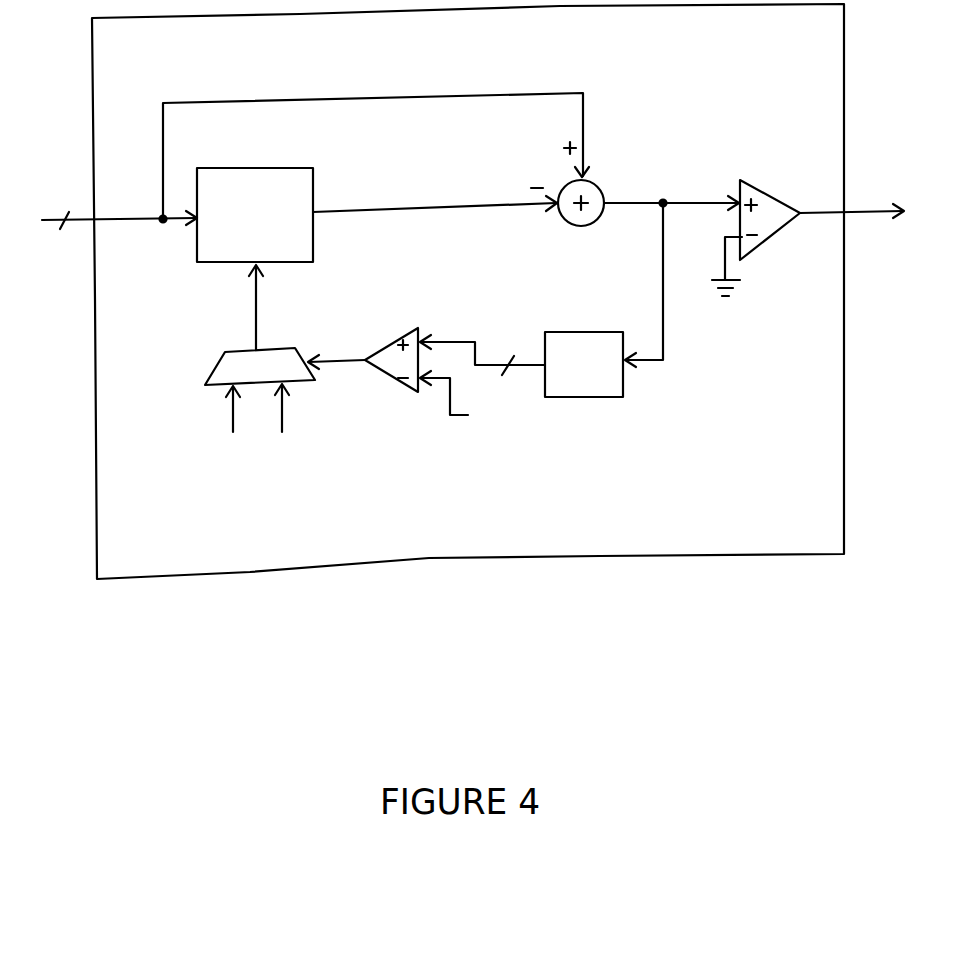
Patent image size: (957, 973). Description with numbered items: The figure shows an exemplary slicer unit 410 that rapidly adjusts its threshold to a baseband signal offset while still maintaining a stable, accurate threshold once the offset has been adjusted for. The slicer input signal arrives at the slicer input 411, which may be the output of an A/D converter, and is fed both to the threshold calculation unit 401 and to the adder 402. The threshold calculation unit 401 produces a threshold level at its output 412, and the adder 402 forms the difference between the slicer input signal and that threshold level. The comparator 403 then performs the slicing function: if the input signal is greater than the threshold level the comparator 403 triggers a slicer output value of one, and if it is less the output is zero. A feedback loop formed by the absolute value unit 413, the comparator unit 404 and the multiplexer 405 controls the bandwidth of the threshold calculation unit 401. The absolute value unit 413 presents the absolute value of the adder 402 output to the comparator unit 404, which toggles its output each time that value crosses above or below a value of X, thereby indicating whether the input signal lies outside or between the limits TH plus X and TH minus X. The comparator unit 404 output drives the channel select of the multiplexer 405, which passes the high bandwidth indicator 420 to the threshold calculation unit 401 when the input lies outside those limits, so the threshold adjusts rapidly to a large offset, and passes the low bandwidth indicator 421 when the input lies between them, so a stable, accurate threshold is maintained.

The slicer unit 410 is at (162, 58).
The slicer input 411 is at (86, 219).
The threshold calculation unit 401 is at (258, 169).
The output of the threshold calculation unit 412 is at (435, 190).
The adder 402 is at (593, 195).
The comparator 403 is at (767, 207).
The comparator unit 404 is at (385, 345).
The multiplexer 405 is at (222, 362).
The absolute value unit 413 is at (610, 384).
The high bandwidth indicator 420 is at (283, 412).
The low bandwidth indicator 421 is at (230, 418).